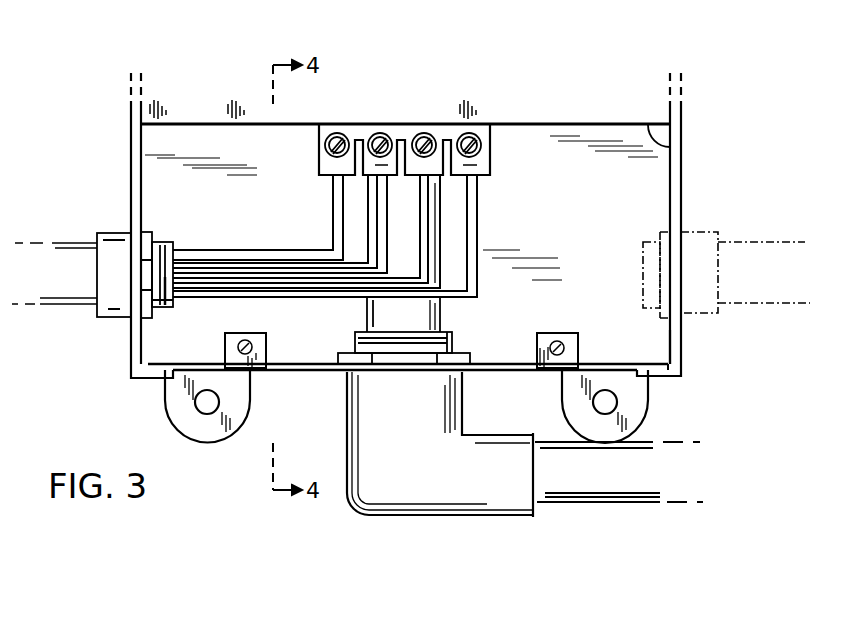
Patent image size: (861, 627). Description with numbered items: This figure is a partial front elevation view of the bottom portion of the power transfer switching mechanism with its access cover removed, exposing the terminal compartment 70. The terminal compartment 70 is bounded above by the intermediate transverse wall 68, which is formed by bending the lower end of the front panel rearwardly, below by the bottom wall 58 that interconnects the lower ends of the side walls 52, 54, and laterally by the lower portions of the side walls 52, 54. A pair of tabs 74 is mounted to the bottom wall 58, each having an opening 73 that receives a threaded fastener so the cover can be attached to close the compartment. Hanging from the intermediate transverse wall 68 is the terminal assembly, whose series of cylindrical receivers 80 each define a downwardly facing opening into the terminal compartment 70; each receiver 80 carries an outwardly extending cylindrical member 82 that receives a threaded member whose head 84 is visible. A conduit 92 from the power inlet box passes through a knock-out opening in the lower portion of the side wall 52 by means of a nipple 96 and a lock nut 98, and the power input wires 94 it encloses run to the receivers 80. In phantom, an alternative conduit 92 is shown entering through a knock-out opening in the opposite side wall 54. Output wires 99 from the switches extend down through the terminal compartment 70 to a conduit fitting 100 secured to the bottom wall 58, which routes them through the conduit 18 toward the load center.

The conduit 18 is at (560, 505).
The side wall 52 is at (129, 342).
The side wall 54 is at (683, 343).
The bottom wall 58 is at (274, 370).
The intermediate transverse wall 68 is at (660, 139).
The terminal compartment 70 is at (652, 182).
The openings 73 is at (238, 347).
The tabs 74 is at (269, 341).
The cylindrical receivers 80 is at (318, 160).
The cylindrical member 82 is at (333, 134).
The head of threaded member 84 is at (325, 142).
The conduit 92 is at (62, 308).
The power input wires 94 is at (333, 235).
The nipple 96 is at (117, 233).
The lock nut 98 is at (148, 231).
The output wires 99 is at (426, 318).
The conduit fitting 100 is at (395, 515).